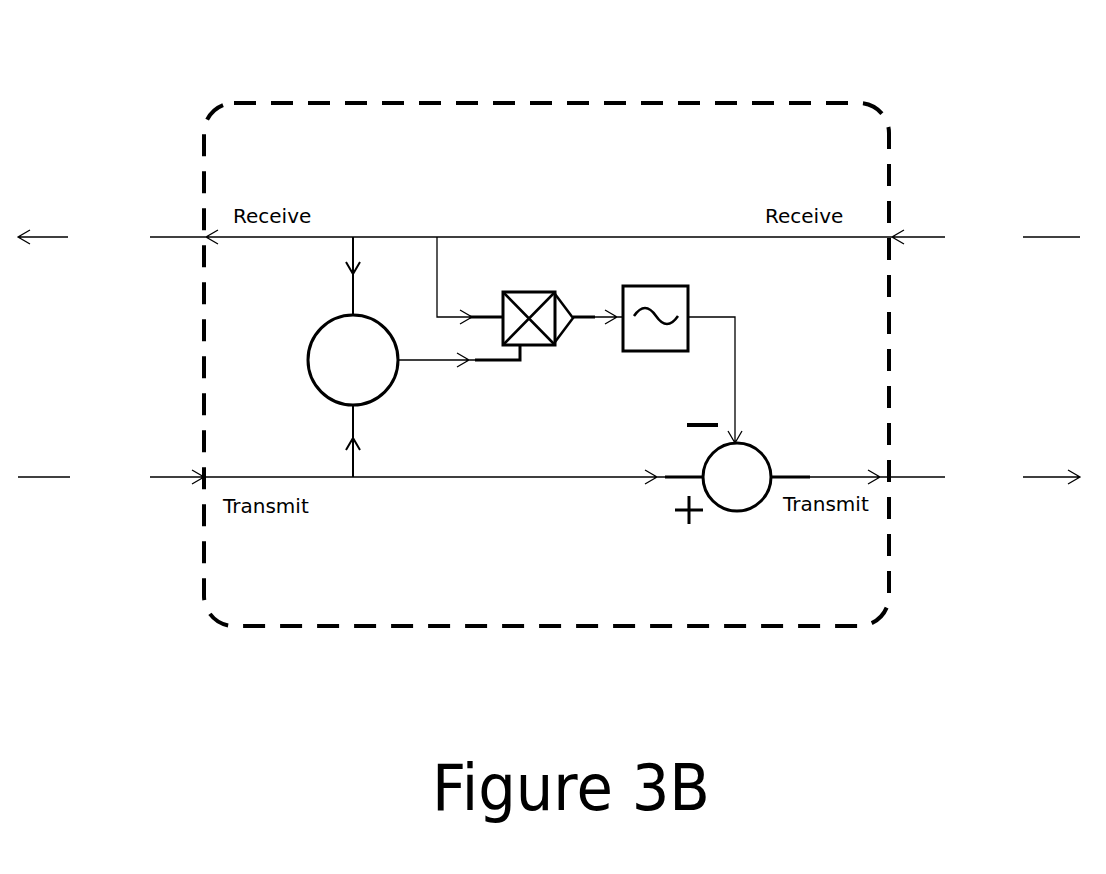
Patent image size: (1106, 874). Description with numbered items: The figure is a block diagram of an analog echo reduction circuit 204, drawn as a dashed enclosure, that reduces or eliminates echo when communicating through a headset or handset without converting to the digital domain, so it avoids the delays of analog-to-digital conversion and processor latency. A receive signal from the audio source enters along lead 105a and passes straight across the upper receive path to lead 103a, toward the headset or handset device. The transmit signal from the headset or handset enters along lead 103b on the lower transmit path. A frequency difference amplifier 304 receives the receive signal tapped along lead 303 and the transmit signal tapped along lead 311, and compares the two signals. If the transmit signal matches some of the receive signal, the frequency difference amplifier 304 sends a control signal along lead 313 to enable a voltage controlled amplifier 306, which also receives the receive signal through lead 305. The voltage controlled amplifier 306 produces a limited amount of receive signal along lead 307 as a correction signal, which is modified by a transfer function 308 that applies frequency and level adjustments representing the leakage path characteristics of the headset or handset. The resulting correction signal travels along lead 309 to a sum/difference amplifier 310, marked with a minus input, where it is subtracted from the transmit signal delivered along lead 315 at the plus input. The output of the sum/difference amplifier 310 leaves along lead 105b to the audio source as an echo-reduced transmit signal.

The echo reduction circuit 204 is at (527, 60).
The lead 103a is at (111, 237).
The lead 103b is at (111, 477).
The lead 105a is at (984, 237).
The lead 105b is at (984, 477).
The lead 303 is at (353, 265).
The frequency difference amplifier 304 is at (335, 313).
The receive signal path to VCA 305 is at (437, 270).
The voltage controlled amplifier 306 is at (543, 352).
The lead 307 is at (588, 315).
The transfer function 308 is at (670, 358).
The lead 309 is at (735, 370).
The sum/difference amplifier 310 is at (730, 512).
The lead 311 is at (353, 435).
The lead 313 is at (457, 362).
The lead 315 is at (512, 482).